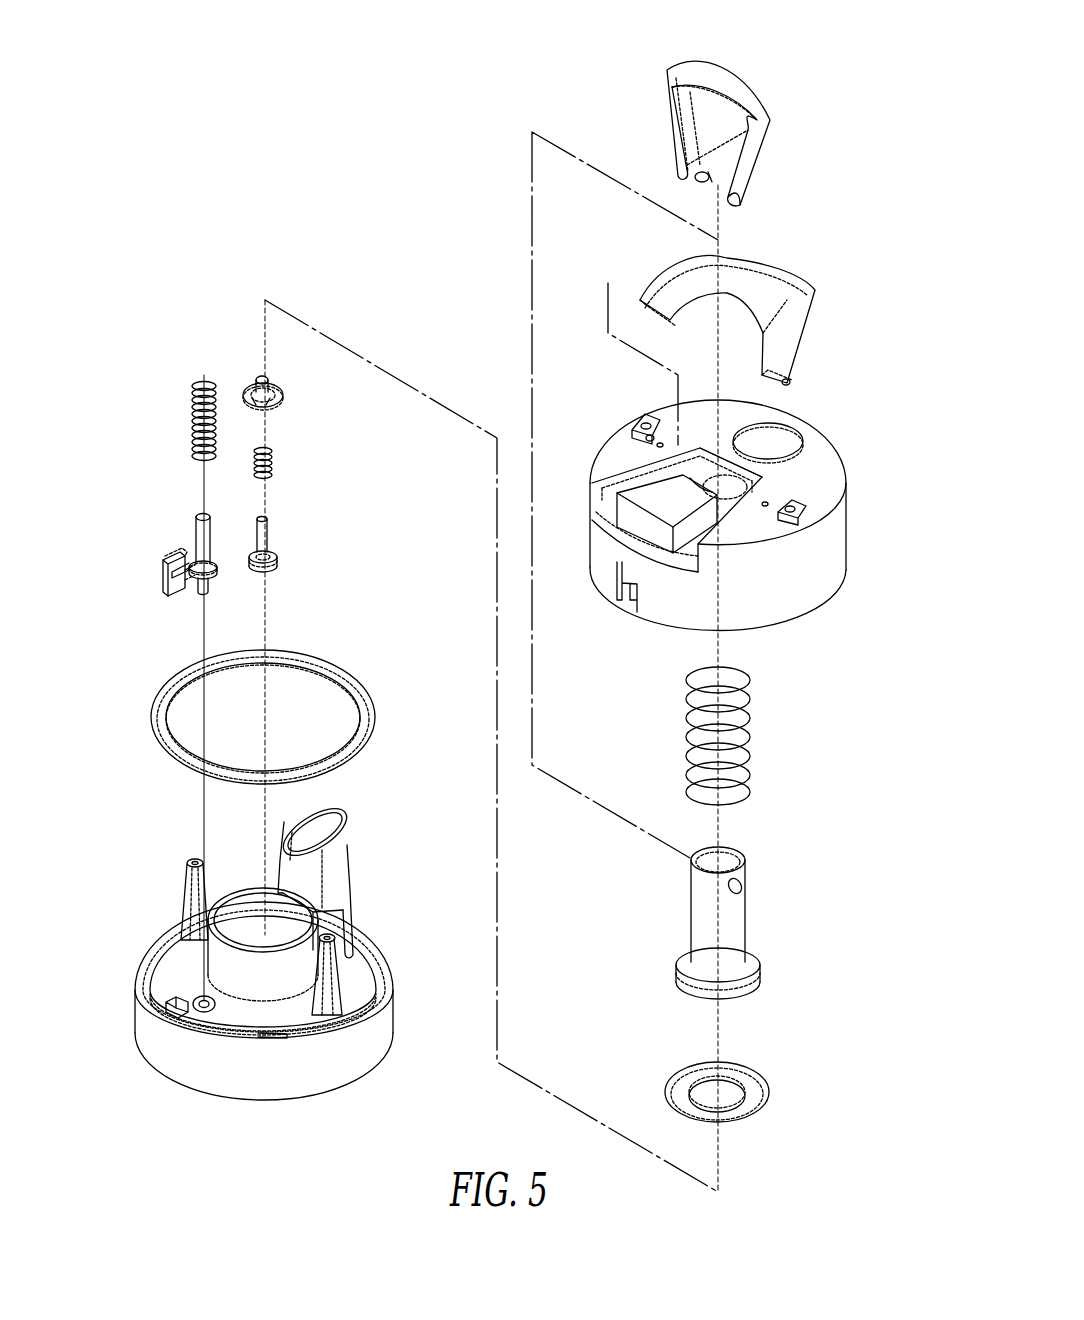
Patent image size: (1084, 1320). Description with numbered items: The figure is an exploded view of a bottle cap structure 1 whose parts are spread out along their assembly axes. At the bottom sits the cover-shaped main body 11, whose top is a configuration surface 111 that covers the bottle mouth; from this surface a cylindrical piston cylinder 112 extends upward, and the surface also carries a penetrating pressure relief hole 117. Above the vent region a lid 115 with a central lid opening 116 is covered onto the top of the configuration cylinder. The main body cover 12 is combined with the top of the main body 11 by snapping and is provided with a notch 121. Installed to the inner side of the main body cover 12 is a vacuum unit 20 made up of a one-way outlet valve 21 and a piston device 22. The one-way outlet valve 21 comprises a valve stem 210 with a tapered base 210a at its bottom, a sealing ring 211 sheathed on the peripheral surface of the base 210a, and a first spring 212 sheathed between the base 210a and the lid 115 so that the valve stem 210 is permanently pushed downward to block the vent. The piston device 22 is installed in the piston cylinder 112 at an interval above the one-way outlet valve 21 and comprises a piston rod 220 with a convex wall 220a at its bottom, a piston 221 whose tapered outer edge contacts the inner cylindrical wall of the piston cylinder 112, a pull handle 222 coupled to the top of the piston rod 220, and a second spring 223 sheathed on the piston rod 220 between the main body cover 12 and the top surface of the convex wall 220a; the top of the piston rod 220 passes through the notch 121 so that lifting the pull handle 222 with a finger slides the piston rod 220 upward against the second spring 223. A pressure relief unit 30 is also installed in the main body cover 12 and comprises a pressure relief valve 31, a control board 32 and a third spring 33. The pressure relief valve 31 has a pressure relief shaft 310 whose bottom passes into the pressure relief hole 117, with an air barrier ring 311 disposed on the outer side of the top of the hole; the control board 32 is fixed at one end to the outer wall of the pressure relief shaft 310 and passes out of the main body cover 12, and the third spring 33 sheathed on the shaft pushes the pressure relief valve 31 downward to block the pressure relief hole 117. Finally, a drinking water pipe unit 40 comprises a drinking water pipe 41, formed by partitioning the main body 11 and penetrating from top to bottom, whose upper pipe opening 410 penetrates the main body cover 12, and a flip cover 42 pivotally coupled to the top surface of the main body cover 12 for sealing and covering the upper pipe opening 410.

The bottle cap structure 1 is at (846, 240).
The main body 11 is at (266, 875).
The configuration surface 111 is at (352, 968).
The piston cylinder 112 is at (218, 960).
The lid 115 is at (289, 352).
The lid opening 116 is at (262, 375).
The pressure relief hole 117 is at (195, 997).
The main body cover 12 is at (830, 542).
The notch 121 is at (729, 498).
The vacuum unit 20 is at (815, 861).
The one-way outlet valve 21 is at (342, 531).
The valve stem 210 is at (266, 535).
The tapered base 210a is at (280, 555).
The sealing ring 211 is at (276, 568).
The first spring 212 is at (272, 462).
The piston device 22 is at (773, 939).
The piston rod 220 is at (735, 932).
The convex wall 220a is at (753, 985).
The piston 221 is at (768, 1092).
The pull handle 222 is at (738, 97).
The second spring 223 is at (747, 712).
The pressure relief unit 30 is at (187, 562).
The pressure relief valve 31 is at (218, 562).
The pressure relief shaft 310 is at (203, 533).
The air barrier ring 311 is at (212, 573).
The control board 32 is at (170, 575).
The third spring 33 is at (194, 400).
The drinking water pipe unit 40 is at (359, 863).
The drinking water pipe 41 is at (342, 870).
The upper pipe opening 410 is at (310, 830).
The flip cover 42 is at (792, 302).